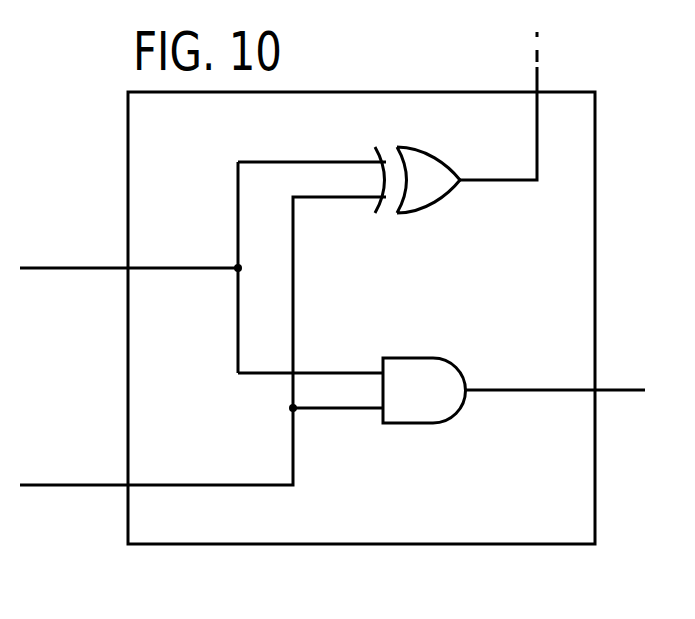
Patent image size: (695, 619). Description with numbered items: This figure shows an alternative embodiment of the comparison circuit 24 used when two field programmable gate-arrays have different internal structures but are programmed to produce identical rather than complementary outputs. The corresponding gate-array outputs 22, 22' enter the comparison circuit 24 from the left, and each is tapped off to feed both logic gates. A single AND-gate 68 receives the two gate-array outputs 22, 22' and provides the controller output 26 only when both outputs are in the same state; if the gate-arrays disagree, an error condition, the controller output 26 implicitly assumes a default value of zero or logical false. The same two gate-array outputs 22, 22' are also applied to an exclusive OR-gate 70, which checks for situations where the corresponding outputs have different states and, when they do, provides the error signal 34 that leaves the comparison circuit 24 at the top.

The gate-array output 22 is at (195, 267).
The gate-array output 22' is at (203, 341).
The comparison circuit 24 is at (436, 545).
The controller output 26 is at (630, 384).
The error signal 34 is at (537, 72).
The AND-gate 68 is at (425, 423).
The exclusive OR-gate 70 is at (437, 150).